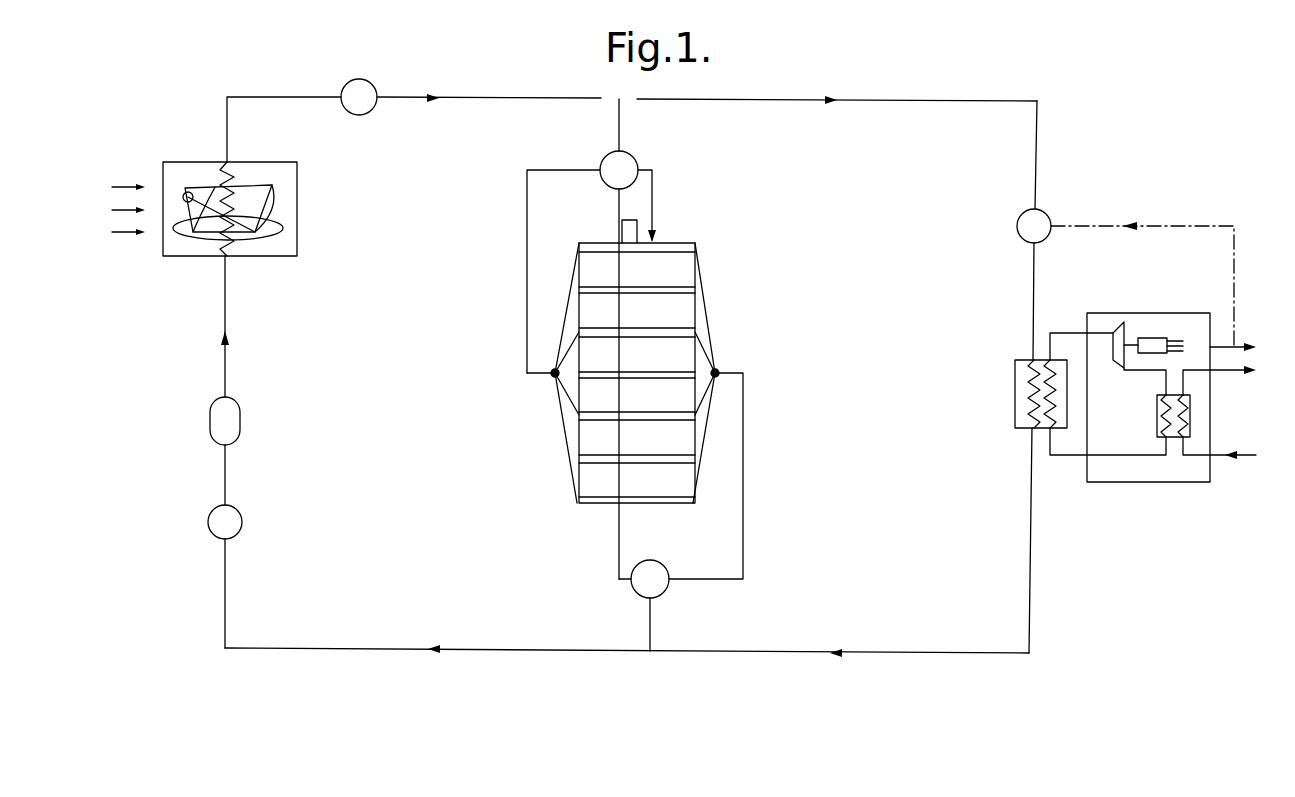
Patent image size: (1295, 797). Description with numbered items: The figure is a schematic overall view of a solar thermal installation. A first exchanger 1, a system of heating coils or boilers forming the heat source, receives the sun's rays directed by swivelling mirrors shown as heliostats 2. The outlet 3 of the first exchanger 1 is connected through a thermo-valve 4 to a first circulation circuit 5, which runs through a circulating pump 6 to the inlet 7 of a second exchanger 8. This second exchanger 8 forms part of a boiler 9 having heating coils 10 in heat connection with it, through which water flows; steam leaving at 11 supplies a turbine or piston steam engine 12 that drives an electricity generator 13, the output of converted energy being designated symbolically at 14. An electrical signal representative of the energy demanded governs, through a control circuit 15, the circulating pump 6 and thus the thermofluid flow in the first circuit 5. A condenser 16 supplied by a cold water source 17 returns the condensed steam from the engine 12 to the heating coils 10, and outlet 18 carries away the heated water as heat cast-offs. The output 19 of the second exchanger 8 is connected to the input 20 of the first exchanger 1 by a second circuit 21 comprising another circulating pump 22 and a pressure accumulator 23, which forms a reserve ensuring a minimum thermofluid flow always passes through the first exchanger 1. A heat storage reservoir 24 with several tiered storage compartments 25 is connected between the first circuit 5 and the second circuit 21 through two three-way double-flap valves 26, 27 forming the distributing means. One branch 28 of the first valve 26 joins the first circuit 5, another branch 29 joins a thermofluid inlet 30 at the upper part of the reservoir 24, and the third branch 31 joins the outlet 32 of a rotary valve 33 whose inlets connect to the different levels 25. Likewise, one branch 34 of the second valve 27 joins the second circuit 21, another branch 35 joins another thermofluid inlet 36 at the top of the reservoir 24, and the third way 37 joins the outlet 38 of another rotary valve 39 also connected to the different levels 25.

The first exchanger 1 is at (231, 177).
The heliostats 2 is at (256, 258).
The outlet of the first exchanger 3 is at (226, 137).
The thermo-valve 4 is at (368, 85).
The first circulation circuit 5 is at (501, 98).
The circulating pump 6 is at (1040, 215).
The inlet of the second exchanger 7 is at (1030, 343).
The second exchanger 8 is at (1028, 389).
The boiler 9 is at (1025, 429).
The heating coils 10 is at (1056, 389).
The steam outlet of the heating coils 11 is at (1053, 348).
The steam engine 12 is at (1119, 343).
The electricity generator 13 is at (1155, 342).
The output of converted energy 14 is at (1252, 346).
The control circuit 15 is at (1158, 226).
The condenser 16 is at (1192, 429).
The cold water source 17 is at (1233, 459).
The outlet for the water heater in the condenser 18 is at (1252, 371).
The output of the second exchanger 19 is at (1034, 455).
The input of the first exchanger 20 is at (225, 313).
The second circuit 21 is at (781, 650).
The circulating pump 22 is at (238, 526).
The pressure accumulator 23 is at (235, 419).
The heat storage reservoir 24 is at (702, 268).
The tiered storage compartments 25 is at (606, 486).
The first three-way double-flap valve 26 is at (636, 161).
The second three-way double-flap valve 27 is at (660, 593).
The branch of the first valve 28 is at (619, 126).
The branch of the first valve 29 is at (656, 192).
The thermofluid inlet 30 is at (654, 241).
The third branch of the first valve 31 is at (578, 172).
The outlet of the rotary valve 32 is at (537, 378).
The rotary valve 33 is at (463, 353).
The branch of the second valve 34 is at (648, 629).
The branch of the second valve 35 is at (617, 581).
The thermofluid inlet 36 is at (630, 237).
The third way of the second valve 37 is at (693, 578).
The outlet of the rotary valve 38 is at (745, 374).
The rotary valve 39 is at (718, 368).